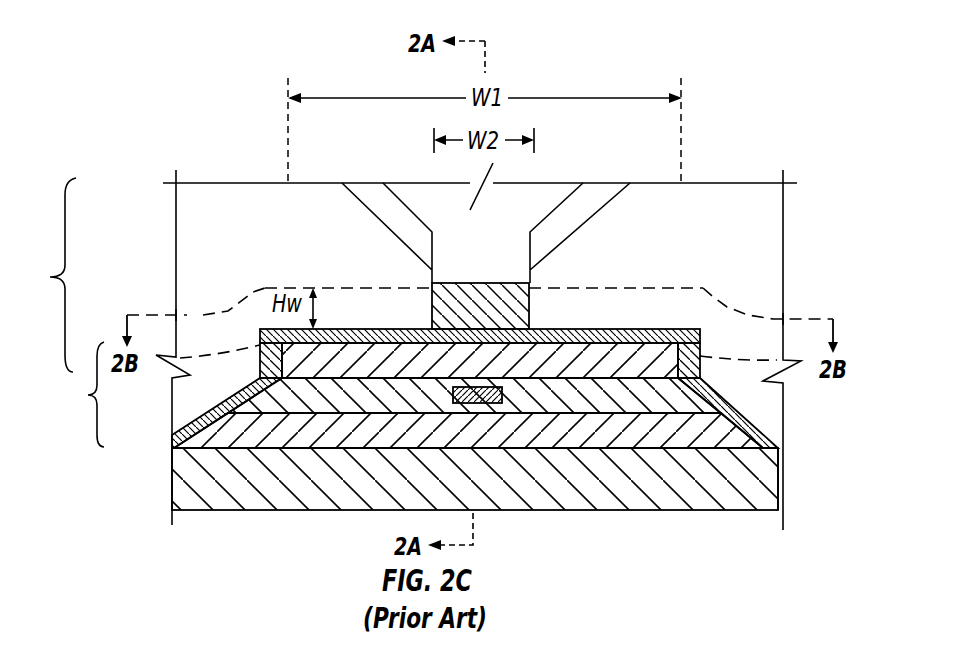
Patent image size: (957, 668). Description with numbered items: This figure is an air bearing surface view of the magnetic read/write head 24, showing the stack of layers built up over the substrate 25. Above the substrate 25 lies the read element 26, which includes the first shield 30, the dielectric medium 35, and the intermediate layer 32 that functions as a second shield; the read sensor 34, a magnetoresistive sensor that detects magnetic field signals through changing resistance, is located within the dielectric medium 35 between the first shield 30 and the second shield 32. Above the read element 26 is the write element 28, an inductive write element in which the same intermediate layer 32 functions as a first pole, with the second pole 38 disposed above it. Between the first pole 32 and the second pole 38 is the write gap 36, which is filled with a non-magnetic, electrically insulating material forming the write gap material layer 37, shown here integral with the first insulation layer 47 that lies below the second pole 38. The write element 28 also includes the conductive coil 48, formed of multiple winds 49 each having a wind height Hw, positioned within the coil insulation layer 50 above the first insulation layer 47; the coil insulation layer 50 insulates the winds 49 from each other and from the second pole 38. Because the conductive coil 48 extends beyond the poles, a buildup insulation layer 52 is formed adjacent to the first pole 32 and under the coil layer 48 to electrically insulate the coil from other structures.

The magnetic read/write head 24 is at (152, 53).
The substrate 25 is at (185, 490).
The read element 26 is at (80, 394).
The write element 28 is at (46, 275).
The first shield 30 is at (232, 440).
The intermediate layer 32 is at (290, 373).
The read sensor 34 is at (453, 397).
The dielectric medium 35 is at (288, 406).
The write gap 36 is at (436, 335).
The write gap material layer 37 is at (512, 340).
The second pole 38 is at (466, 317).
The first insulation layer 47 is at (772, 434).
The conductive coil 48 is at (633, 266).
The winds 49 is at (636, 326).
The coil insulation layer 50 is at (241, 239).
The buildup insulation layer 52 is at (203, 385).